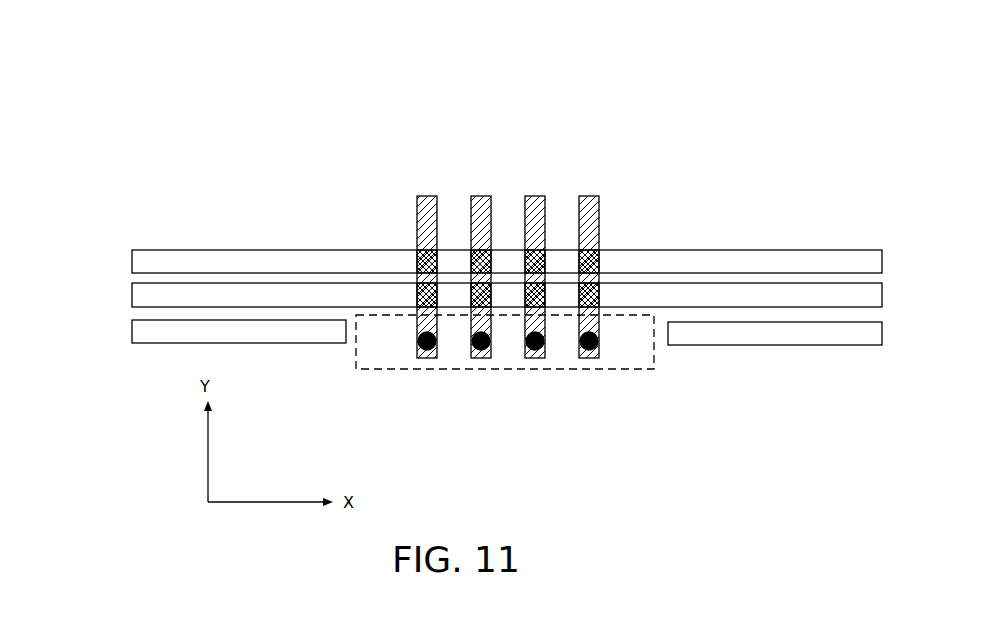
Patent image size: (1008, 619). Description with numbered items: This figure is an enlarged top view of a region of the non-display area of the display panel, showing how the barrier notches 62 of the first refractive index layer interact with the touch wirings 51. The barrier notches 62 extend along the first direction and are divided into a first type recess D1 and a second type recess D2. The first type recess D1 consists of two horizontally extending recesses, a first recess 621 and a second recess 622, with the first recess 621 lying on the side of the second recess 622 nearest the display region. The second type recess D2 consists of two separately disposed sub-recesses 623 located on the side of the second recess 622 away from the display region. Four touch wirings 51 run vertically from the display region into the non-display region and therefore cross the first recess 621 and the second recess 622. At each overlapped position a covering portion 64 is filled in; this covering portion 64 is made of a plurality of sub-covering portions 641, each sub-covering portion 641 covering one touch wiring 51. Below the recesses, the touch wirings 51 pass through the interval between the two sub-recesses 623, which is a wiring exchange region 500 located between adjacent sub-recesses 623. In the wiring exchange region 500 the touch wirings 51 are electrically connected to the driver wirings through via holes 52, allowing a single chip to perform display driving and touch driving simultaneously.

The barrier notches 62 is at (408, 55).
The first type recess D1 is at (485, 25).
The second type recess D2 is at (485, 100).
The first recess 621 is at (85, 262).
The second recess 622 is at (85, 295).
The sub-recesses 623 is at (85, 328).
The covering portion 64 is at (668, 65).
The sub-covering portions 641 is at (372, 208).
The touch wirings 51 is at (431, 358).
The via holes 52 is at (418, 350).
The wiring exchange region 500 is at (646, 374).